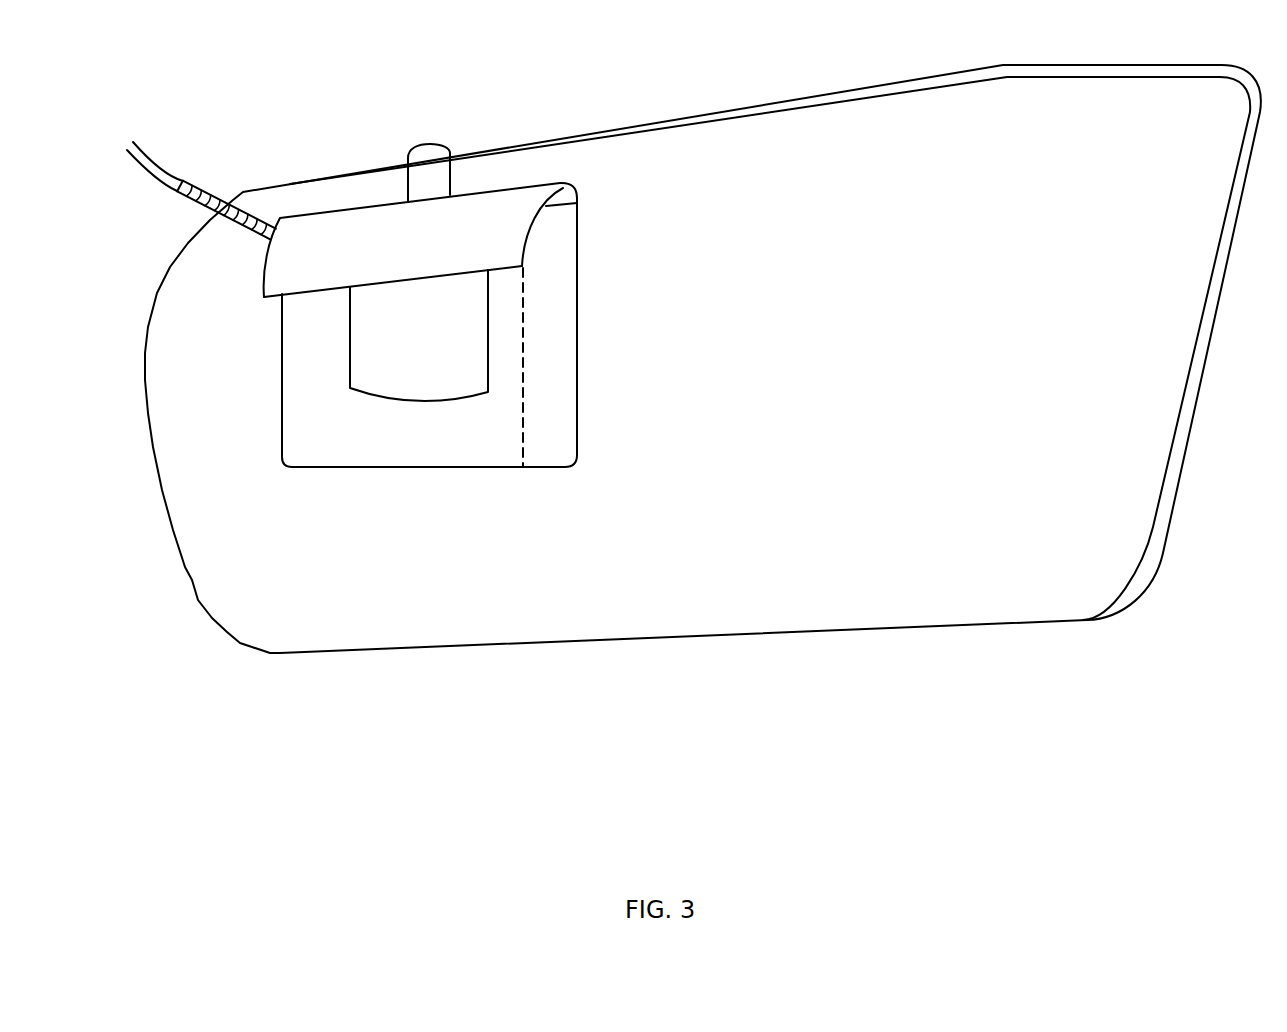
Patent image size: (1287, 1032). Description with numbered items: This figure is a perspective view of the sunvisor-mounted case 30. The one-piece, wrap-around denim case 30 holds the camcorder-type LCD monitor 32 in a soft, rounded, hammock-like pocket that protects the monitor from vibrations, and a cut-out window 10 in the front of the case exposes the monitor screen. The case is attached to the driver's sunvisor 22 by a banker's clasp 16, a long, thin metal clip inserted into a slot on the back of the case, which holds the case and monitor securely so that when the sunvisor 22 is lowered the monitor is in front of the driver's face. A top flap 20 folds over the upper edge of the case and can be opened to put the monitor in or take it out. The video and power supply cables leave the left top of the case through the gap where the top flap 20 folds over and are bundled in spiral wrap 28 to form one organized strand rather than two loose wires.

The window in case 10 is at (457, 342).
The banker's clasp 16 is at (423, 143).
The top flap 20 is at (703, 359).
The driver's sunvisor 22 is at (770, 348).
The spiral wrap 28 is at (233, 186).
The case 30 is at (563, 453).
The camcorder-type LCD monitor 32 is at (419, 335).